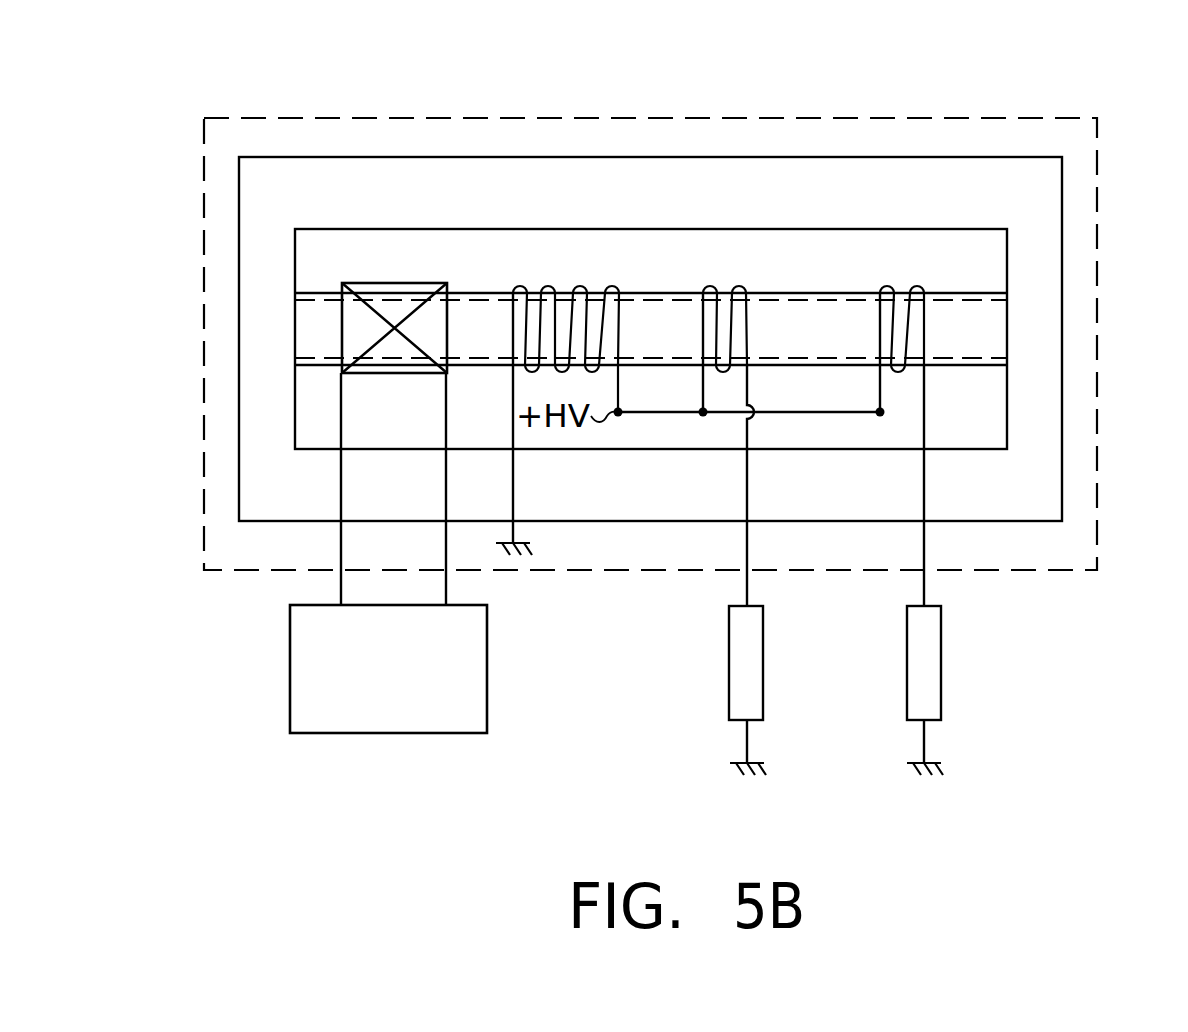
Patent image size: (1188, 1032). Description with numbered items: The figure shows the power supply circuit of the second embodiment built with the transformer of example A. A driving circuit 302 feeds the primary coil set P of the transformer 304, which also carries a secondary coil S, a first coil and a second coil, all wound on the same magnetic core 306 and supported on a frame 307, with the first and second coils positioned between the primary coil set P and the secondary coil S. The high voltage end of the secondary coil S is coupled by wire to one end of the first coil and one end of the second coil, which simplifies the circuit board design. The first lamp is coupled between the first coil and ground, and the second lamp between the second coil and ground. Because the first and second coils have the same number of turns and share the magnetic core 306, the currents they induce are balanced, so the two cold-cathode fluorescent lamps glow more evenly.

The driving circuit 302 is at (290, 680).
The transformer 304 is at (863, 118).
The magnetic core 306 is at (653, 157).
The frame 307 is at (998, 293).
The primary coil set P is at (394, 308).
The secondary coil S is at (557, 399).